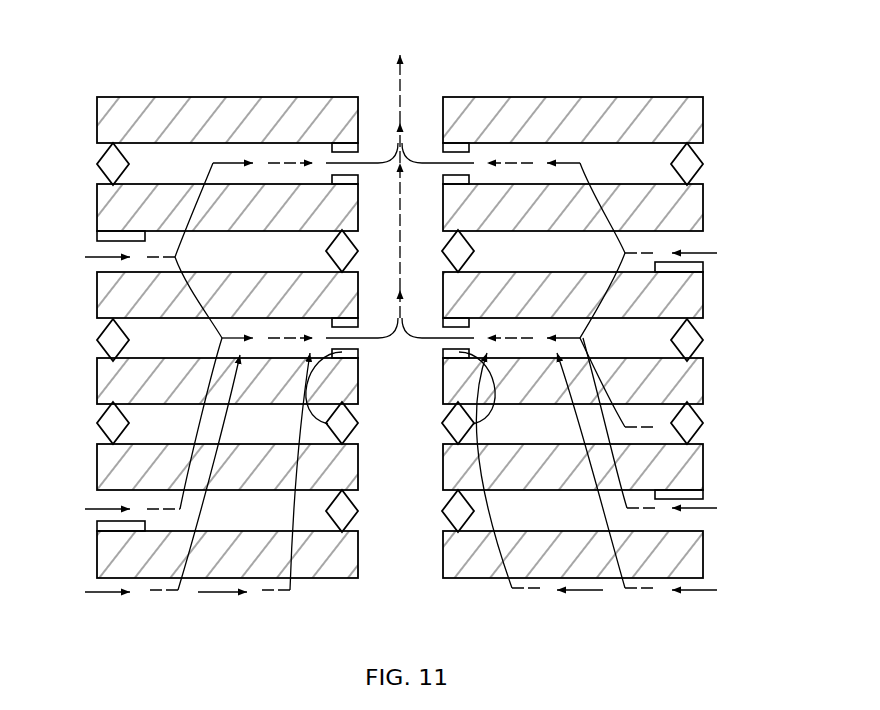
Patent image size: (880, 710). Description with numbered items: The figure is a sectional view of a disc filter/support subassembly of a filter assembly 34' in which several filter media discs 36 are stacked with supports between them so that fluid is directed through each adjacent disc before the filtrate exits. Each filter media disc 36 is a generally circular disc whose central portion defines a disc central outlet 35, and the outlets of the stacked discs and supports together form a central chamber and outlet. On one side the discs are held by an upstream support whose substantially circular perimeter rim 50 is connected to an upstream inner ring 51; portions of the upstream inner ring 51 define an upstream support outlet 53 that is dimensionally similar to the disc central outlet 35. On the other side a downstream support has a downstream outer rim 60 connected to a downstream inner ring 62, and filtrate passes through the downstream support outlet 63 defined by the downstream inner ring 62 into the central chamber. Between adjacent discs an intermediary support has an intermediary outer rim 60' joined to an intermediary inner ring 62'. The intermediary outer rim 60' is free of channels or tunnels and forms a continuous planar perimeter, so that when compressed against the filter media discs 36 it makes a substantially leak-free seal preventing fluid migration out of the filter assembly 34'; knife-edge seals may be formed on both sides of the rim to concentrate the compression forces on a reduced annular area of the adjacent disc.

The filter assembly 34' is at (670, 27).
The filter media disc 36 is at (97, 123).
The perimeter rim 50 is at (97, 233).
The upstream inner ring 51 is at (340, 264).
The upstream support outlet 53 is at (409, 262).
The downstream outer rim 60 is at (402, 244).
The intermediary outer rim 60' is at (402, 416).
The downstream inner ring 62 is at (400, 211).
The intermediary inner ring 62' is at (400, 398).
The downstream support outlet 63 is at (389, 357).
The disc central outlet 35 is at (389, 400).